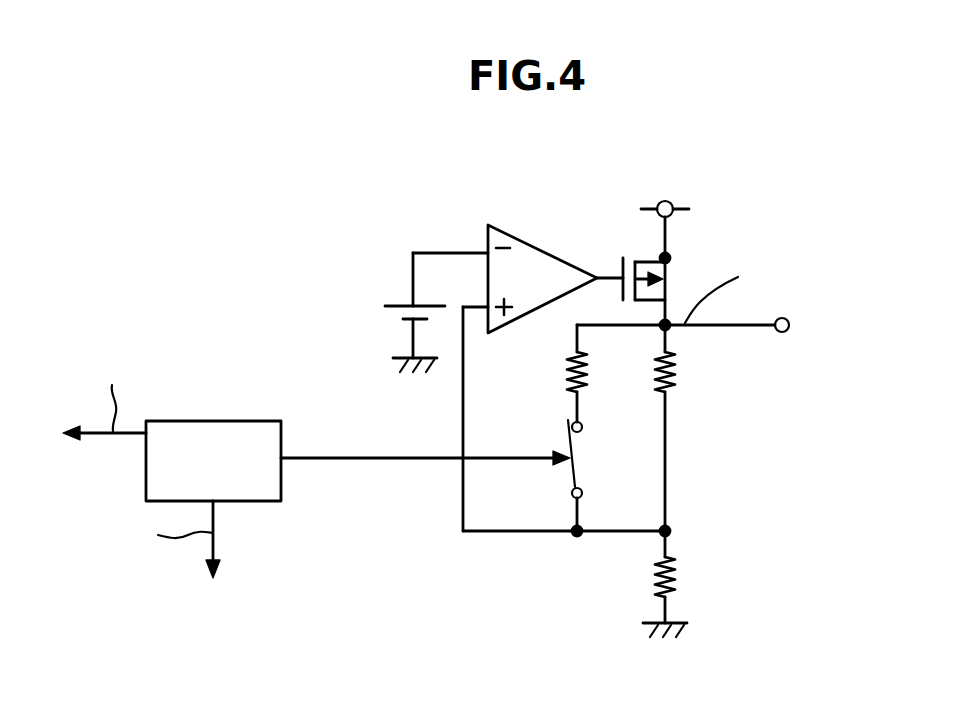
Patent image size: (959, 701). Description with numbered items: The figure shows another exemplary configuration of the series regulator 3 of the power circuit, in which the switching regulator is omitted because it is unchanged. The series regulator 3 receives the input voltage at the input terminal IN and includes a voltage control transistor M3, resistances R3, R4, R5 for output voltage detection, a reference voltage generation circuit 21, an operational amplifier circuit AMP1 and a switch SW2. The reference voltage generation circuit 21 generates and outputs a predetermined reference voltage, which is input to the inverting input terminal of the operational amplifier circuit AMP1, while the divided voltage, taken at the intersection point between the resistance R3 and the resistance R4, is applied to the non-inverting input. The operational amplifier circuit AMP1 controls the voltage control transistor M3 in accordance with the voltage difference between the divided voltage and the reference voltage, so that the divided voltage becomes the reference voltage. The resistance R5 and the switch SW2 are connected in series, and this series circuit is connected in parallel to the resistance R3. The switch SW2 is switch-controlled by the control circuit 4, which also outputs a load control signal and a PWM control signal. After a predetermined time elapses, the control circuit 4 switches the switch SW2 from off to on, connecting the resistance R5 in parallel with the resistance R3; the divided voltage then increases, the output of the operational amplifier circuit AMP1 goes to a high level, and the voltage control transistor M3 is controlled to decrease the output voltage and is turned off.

The series regulator 3 is at (848, 242).
The control circuit 4 is at (217, 421).
The reference voltage generation circuit 21 is at (387, 318).
The input terminal IN is at (673, 219).
The voltage control transistor M3 is at (644, 264).
The operational amplifier circuit AMP1 is at (555, 279).
The resistance R3 is at (687, 428).
The resistance R4 is at (681, 584).
The resistance R5 is at (555, 387).
The switch SW2 is at (602, 475).